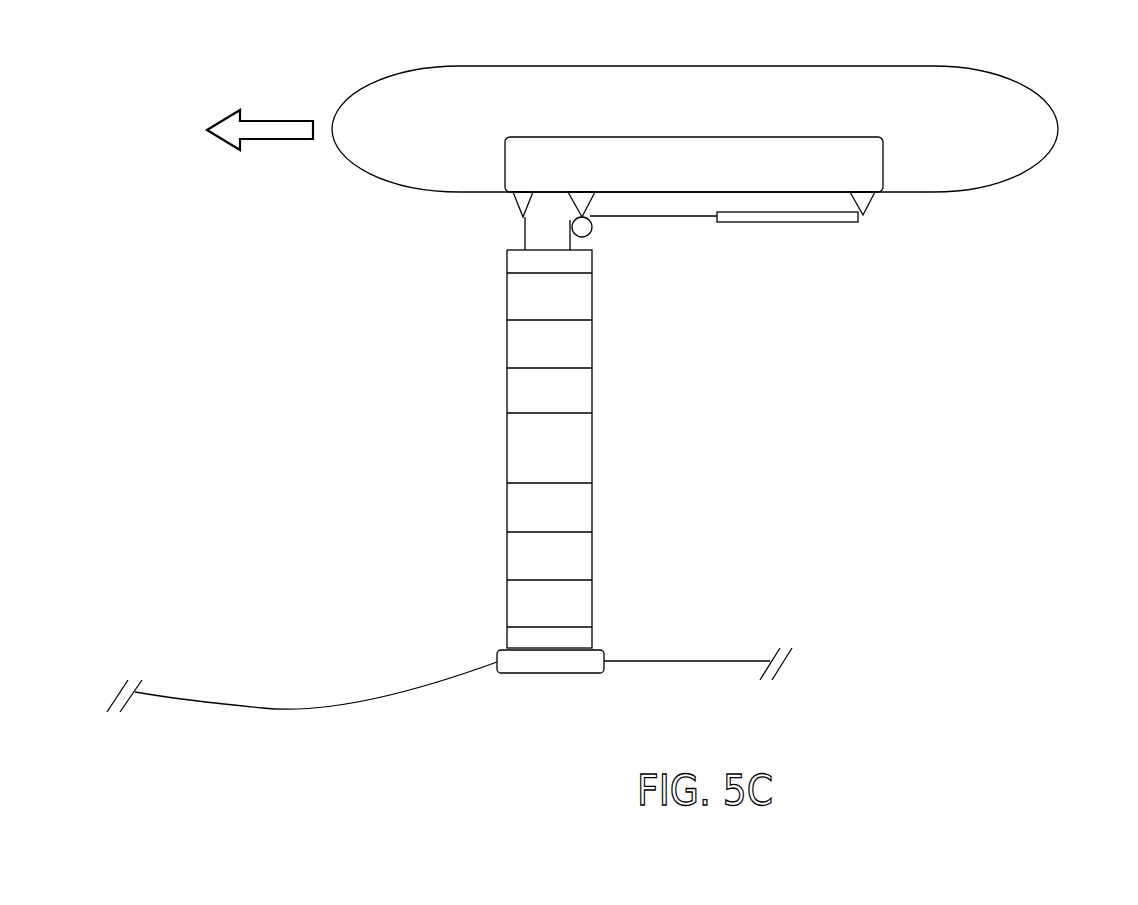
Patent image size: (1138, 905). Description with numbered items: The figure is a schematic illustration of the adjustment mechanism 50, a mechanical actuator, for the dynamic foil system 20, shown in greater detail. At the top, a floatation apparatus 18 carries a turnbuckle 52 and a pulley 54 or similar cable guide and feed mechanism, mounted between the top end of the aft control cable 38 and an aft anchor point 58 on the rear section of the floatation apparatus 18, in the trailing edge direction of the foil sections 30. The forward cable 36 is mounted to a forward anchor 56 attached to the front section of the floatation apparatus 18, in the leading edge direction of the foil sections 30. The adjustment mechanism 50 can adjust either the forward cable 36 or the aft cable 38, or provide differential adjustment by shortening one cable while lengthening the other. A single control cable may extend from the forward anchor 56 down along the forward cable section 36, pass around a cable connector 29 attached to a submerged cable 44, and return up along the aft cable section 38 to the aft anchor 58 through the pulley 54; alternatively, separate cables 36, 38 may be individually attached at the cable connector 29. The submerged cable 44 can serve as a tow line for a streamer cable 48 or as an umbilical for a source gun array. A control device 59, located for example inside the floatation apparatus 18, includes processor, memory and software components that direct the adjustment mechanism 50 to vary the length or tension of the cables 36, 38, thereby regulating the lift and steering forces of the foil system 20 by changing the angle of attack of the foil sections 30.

The floatation apparatus 18 is at (1058, 132).
The control device 59 is at (703, 173).
The forward anchor 56 is at (517, 200).
The pulley 54 is at (592, 229).
The forward cable 36 is at (520, 230).
The aft anchor point 58 is at (868, 203).
The aft control cable 38 is at (687, 219).
The turnbuckle 52 is at (800, 223).
The dynamic foil system 20 is at (597, 464).
The foil sections 30 is at (507, 351).
The adjustment mechanism 50 is at (815, 408).
The cable connector 29 is at (545, 674).
The streamer cable 48 is at (657, 660).
The submerged cable 44 is at (318, 704).